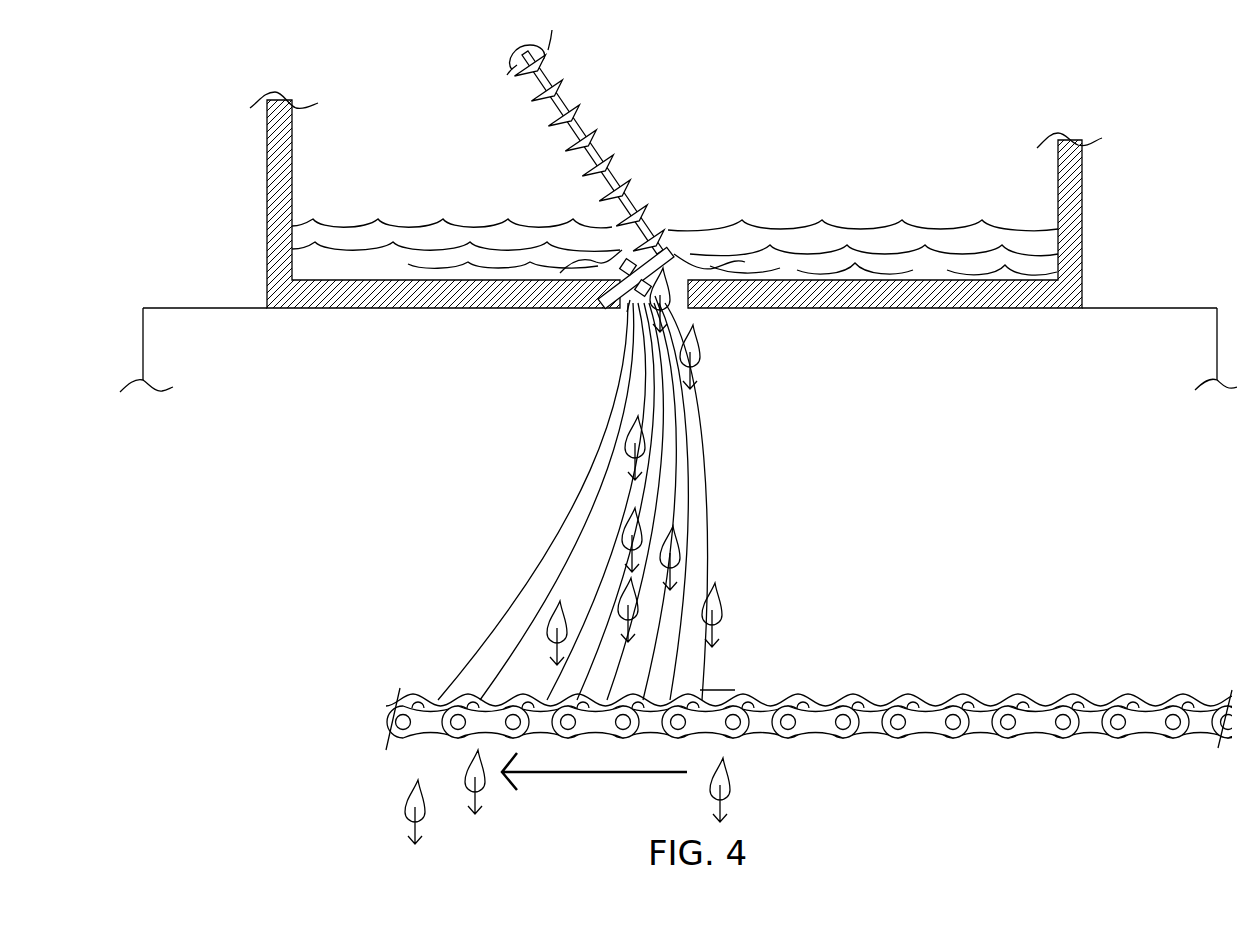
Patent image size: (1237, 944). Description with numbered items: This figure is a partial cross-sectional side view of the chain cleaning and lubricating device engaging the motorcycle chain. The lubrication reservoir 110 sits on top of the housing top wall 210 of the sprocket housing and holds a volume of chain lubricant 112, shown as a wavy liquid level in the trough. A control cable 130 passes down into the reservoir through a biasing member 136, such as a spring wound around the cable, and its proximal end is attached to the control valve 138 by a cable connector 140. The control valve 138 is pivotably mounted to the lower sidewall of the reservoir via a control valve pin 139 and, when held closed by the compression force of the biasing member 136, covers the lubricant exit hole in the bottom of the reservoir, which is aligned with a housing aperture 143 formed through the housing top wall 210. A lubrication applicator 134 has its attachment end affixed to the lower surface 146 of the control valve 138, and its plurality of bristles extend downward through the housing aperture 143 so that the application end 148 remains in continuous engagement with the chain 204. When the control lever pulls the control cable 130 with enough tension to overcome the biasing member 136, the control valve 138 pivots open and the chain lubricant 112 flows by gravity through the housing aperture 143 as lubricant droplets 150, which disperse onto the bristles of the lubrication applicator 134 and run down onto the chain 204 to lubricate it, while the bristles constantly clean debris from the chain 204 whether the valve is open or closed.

The lubrication reservoir 110 is at (303, 178).
The chain lubricant 112 is at (848, 227).
The control cable 130 is at (590, 152).
The lubrication applicator 134 is at (613, 412).
The biasing member 136 is at (543, 120).
The control valve 138 is at (676, 252).
The control valve pin 139 is at (600, 268).
The cable connector 140 is at (620, 258).
The housing aperture 143 is at (681, 314).
The lower surface 146 is at (690, 268).
The application end 148 is at (717, 690).
The lubricant droplets 150 is at (556, 617).
The chain 204 is at (1020, 700).
The housing top wall 210 is at (1128, 308).